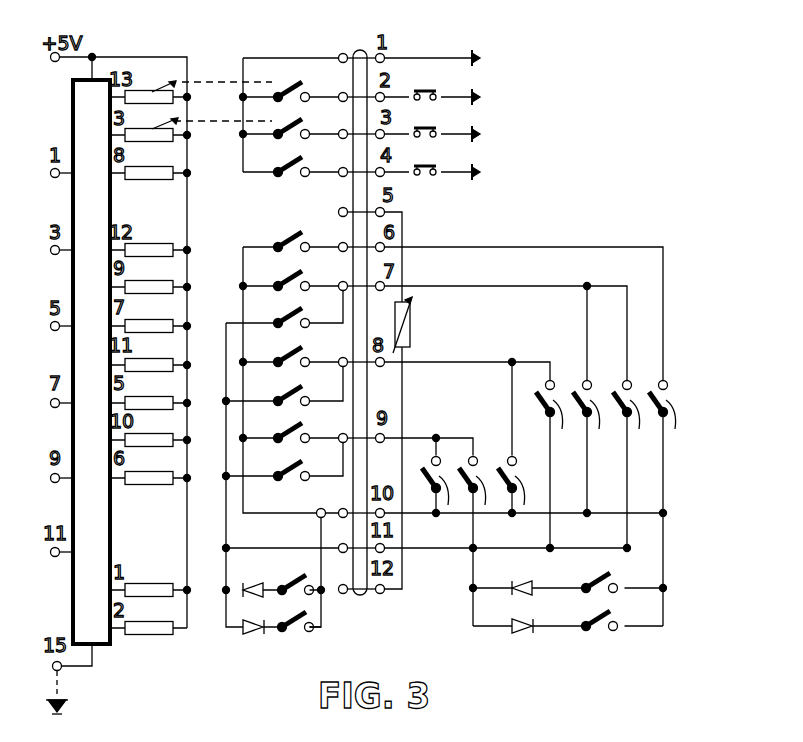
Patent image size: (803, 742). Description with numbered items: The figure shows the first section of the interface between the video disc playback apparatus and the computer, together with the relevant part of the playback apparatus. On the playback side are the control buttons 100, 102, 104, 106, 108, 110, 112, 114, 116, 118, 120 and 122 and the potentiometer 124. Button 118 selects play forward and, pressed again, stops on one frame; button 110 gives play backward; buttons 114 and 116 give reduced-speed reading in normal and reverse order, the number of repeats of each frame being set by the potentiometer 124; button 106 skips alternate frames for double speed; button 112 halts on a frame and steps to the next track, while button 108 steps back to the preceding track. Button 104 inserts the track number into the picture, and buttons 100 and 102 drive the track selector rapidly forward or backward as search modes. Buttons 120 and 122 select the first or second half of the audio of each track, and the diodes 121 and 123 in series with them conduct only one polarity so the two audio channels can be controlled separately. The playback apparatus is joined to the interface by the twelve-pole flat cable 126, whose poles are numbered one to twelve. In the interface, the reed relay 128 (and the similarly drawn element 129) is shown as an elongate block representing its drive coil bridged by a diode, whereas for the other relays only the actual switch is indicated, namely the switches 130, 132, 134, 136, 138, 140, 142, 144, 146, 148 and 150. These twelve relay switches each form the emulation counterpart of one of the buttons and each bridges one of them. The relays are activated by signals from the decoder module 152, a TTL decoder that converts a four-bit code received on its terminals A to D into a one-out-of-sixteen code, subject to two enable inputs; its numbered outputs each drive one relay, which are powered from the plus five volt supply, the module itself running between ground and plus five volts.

The button 100 is at (425, 91).
The button 102 is at (429, 128).
The button 104 is at (431, 166).
The button 106 is at (674, 416).
The button 108 is at (638, 416).
The button 110 is at (558, 416).
The button 112 is at (598, 416).
The button 114 is at (447, 483).
The button 116 is at (485, 483).
The button 118 is at (523, 483).
The button 120 is at (614, 594).
The diode 121 is at (528, 597).
The button 122 is at (602, 638).
The diode 123 is at (515, 634).
The potentiometer 124 is at (412, 335).
The flat cable 126 is at (361, 47).
The reed relay 128 is at (213, 82).
The variable resistor 129 is at (150, 124).
The reed relay switch 130 is at (213, 121).
The reed relay switch 132 is at (291, 159).
The reed relay switch 134 is at (291, 233).
The reed relay switch 136 is at (291, 272).
The reed relay switch 138 is at (284, 309).
The reed relay switch 140 is at (291, 349).
The reed relay switch 142 is at (284, 386).
The reed relay switch 144 is at (291, 425).
The reed relay switch 146 is at (284, 462).
The reed relay switch 148 is at (284, 575).
The reed relay switch 150 is at (282, 635).
The decoder module 152 is at (104, 645).